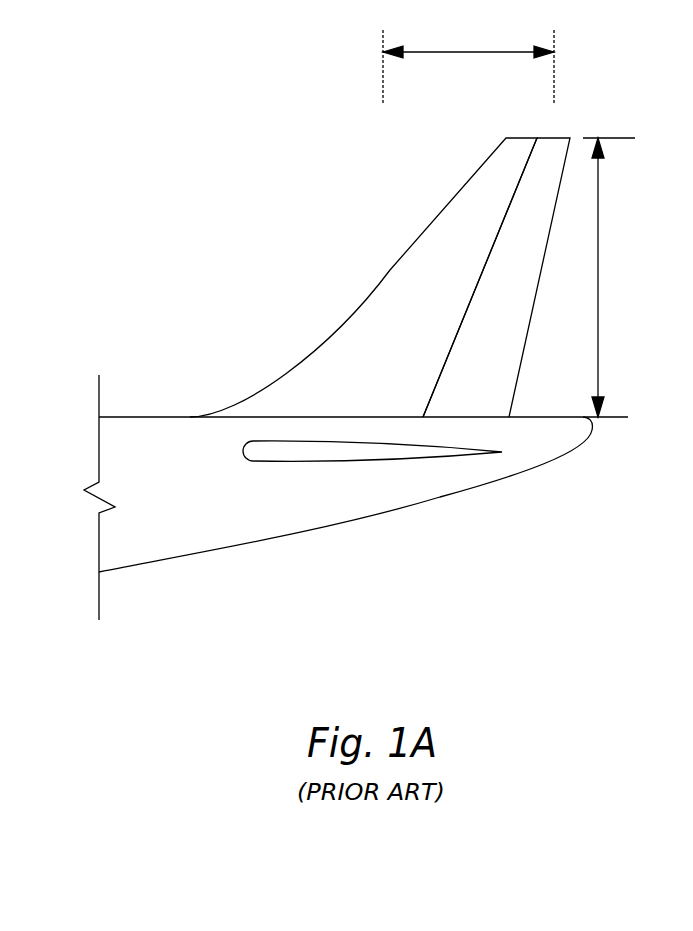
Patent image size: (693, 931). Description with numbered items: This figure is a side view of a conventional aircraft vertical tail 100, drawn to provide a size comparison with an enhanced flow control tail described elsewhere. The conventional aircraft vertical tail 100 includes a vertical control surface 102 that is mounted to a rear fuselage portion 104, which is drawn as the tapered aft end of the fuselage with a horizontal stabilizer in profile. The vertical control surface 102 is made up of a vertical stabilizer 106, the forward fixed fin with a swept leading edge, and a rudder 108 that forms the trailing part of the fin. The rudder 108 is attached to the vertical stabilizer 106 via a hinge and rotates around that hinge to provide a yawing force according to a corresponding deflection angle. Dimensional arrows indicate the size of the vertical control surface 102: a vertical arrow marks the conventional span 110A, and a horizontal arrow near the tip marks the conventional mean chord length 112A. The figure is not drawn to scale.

The conventional aircraft vertical tail 100 is at (178, 129).
The vertical control surface 102 is at (290, 216).
The rear fuselage portion 104 is at (160, 435).
The vertical stabilizer 106 is at (400, 290).
The rudder 108 is at (490, 295).
The conventional span 110A is at (617, 277).
The conventional mean chord length 112A is at (468, 62).